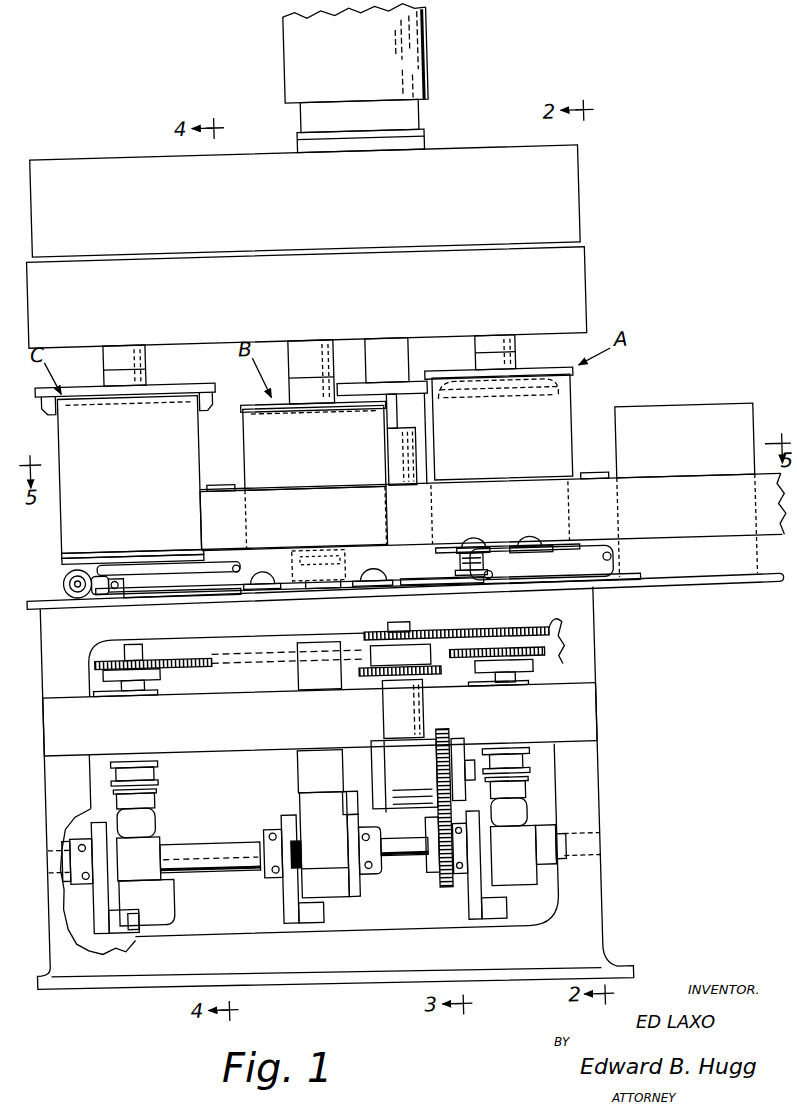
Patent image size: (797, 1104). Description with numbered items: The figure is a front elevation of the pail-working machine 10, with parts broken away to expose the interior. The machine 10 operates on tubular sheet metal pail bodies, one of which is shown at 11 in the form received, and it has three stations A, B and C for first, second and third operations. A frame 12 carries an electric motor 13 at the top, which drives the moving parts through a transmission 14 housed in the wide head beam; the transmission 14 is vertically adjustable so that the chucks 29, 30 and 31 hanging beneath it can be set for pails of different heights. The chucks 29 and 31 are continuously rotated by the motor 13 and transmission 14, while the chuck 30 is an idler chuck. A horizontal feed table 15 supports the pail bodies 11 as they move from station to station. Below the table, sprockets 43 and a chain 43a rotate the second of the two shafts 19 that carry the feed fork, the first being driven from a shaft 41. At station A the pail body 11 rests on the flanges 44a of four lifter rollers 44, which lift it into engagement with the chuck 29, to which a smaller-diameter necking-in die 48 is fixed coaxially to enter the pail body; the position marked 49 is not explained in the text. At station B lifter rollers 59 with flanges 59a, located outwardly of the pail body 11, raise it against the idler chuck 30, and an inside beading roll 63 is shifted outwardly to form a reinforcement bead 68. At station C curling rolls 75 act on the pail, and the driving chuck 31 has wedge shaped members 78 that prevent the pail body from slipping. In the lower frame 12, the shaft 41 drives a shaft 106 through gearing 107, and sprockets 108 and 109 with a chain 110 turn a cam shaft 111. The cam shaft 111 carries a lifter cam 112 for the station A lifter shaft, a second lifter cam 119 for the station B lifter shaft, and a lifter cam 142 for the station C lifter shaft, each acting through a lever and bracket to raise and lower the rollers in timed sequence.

The machine 10 is at (662, 246).
The pail body 11 is at (748, 412).
The frame 12 is at (596, 736).
The electric motor 13 is at (442, 46).
The transmission 14 is at (586, 200).
The horizontal feed table 15 is at (722, 596).
The shafts 19 is at (126, 642).
The chuck 29 is at (540, 372).
The idler chuck 30 is at (262, 400).
The driving chuck 31 is at (166, 378).
The shaft 41 is at (404, 622).
The sprockets 43 is at (150, 658).
The chain 43a is at (236, 661).
The lifter rollers 44 is at (532, 542).
The flange 44a is at (460, 562).
The necking-in die 48 is at (512, 404).
The plate edge 49 is at (578, 384).
The lifter rollers 59 is at (382, 570).
The flanges 59a is at (282, 567).
The inside beading roll 63 is at (336, 546).
The bead 68 is at (106, 546).
The curling rolls 75 is at (66, 572).
The wedge shaped members 78 is at (213, 405).
The shaft 106 is at (462, 754).
The gearing 107 is at (421, 774).
The sprocket 108 is at (444, 735).
The sprocket 109 is at (436, 882).
The chain 110 is at (432, 806).
The cam shaft 111 is at (390, 858).
The lifter cam 112 is at (460, 904).
The second lifter cam 119 is at (277, 886).
The lifter cam 142 is at (88, 898).